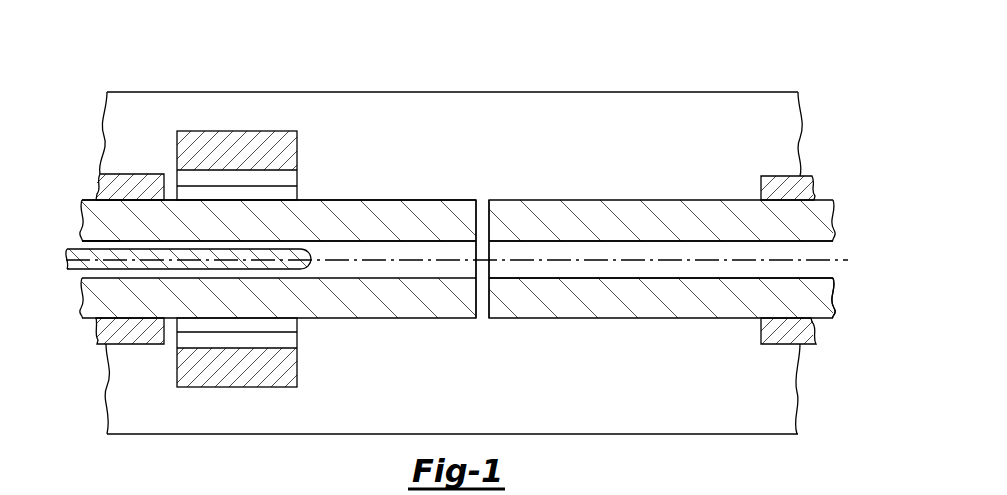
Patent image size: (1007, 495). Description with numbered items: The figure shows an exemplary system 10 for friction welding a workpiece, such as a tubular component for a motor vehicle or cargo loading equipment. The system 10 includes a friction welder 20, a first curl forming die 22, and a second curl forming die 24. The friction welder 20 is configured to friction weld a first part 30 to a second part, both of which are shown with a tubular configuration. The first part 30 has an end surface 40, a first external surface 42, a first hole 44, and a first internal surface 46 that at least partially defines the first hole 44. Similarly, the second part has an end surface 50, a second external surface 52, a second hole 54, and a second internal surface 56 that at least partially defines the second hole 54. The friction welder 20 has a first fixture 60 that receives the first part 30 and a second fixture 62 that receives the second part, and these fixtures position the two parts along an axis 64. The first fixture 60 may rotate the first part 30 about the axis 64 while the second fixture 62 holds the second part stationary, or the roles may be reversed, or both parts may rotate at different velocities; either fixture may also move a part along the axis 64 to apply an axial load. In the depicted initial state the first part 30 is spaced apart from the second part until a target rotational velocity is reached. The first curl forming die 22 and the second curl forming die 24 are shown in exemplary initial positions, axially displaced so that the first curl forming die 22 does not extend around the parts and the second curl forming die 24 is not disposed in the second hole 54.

The system 10 is at (759, 73).
The friction welder 20 is at (548, 92).
The first curl forming die 22 is at (276, 131).
The second curl forming die 24 is at (291, 270).
The first part 30 is at (331, 200).
The end surface 40 is at (476, 223).
The first external surface 42 is at (393, 200).
The first hole 44 is at (82, 245).
The first internal surface 46 is at (392, 242).
The end surface 50 is at (485, 299).
The second external surface 52 is at (548, 318).
The second hole 54 is at (820, 271).
The second internal surface 56 is at (577, 276).
The first fixture 60 is at (129, 174).
The second fixture 62 is at (771, 176).
The axis 64 is at (832, 270).